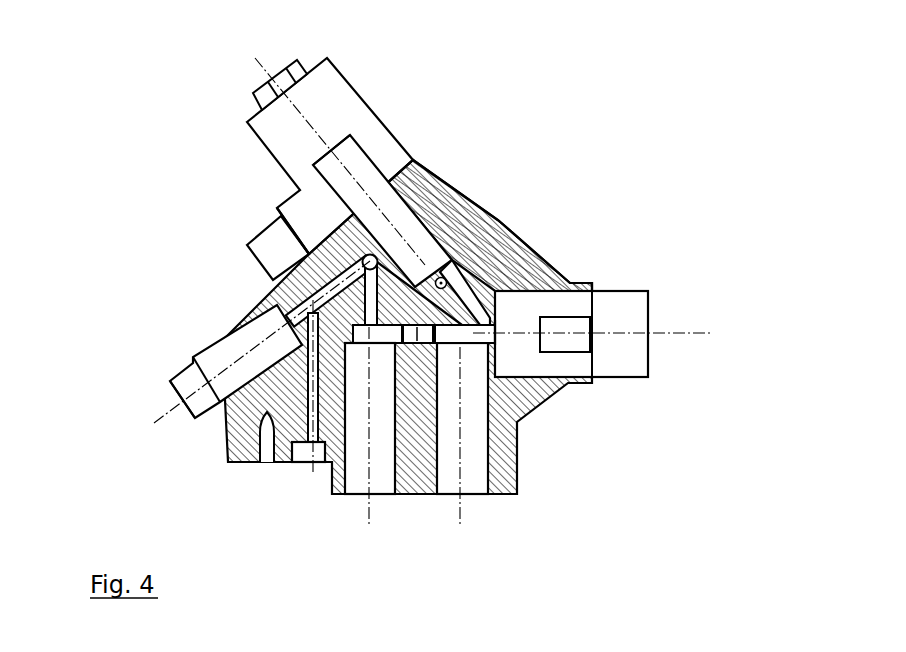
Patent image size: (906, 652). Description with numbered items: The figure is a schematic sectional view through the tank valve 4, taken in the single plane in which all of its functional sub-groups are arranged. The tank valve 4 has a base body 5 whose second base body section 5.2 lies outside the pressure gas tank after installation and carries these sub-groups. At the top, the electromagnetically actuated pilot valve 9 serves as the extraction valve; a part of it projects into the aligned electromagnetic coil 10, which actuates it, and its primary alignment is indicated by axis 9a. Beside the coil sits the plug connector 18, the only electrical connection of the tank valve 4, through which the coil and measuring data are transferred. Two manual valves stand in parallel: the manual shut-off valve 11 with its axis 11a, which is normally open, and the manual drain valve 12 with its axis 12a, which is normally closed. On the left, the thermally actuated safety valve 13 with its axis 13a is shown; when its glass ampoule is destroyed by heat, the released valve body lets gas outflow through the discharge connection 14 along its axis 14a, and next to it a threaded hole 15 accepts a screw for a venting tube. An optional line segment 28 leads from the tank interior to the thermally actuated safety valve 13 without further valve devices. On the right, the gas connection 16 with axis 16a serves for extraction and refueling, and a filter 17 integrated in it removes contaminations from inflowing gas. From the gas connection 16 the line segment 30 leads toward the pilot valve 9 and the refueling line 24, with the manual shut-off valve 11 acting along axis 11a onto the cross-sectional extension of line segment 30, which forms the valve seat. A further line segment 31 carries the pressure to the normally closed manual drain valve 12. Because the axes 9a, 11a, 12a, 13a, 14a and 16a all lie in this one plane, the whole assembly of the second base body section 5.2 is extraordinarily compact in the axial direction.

The tank valve 4 is at (597, 162).
The base body 5 is at (257, 300).
The second base body section 5.2 is at (460, 207).
The pilot valve 9 is at (403, 215).
The axis of pilot valve 9a is at (338, 158).
The electromagnetic coil 10 is at (337, 100).
The manual shut-off valve 11 is at (477, 477).
The axis of manual shut-off valve 11a is at (463, 513).
The manual drain valve 12 is at (355, 485).
The axis of manual drain valve 12a is at (370, 510).
The thermally actuated safety valve 13 is at (192, 355).
The axis of thermally actuated safety valve 13a is at (178, 397).
The discharge connection 14 is at (307, 455).
The axis of discharge connection 14a is at (313, 467).
The threaded hole 15 is at (268, 447).
The gas connection 16 is at (625, 301).
The axis of gas connection 16a is at (680, 332).
The filter 17 is at (568, 323).
The plug connector 18 is at (263, 243).
The refueling line 24 is at (452, 272).
The line segment 28 is at (287, 247).
The line segment 30 is at (497, 334).
The line segment 31 is at (453, 345).